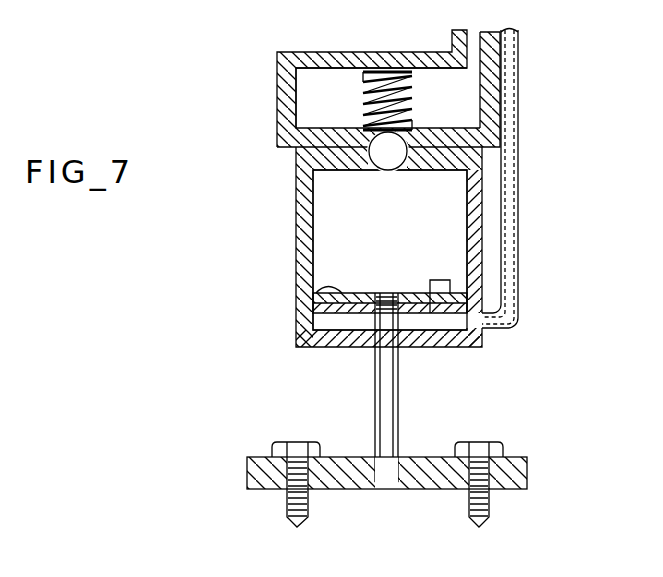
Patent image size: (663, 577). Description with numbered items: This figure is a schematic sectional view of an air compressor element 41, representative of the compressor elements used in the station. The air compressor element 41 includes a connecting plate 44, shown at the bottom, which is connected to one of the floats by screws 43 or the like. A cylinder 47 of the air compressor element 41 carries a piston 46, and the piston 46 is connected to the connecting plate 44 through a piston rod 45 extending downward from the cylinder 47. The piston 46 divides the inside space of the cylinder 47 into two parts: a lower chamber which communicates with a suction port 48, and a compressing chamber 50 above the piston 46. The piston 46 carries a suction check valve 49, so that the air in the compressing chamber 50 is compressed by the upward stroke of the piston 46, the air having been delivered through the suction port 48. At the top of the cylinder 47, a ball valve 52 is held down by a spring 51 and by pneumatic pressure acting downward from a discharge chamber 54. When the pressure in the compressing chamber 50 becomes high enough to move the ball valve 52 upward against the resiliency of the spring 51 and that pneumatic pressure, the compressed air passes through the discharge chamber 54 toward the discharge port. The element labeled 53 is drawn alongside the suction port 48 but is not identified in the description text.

The air compressor element 41 is at (266, 46).
The screws 43 is at (308, 505).
The connecting plate 44 is at (437, 487).
The piston rod 45 is at (397, 386).
The piston 46 is at (314, 293).
The cylinder 47 is at (297, 254).
The suction port 48 is at (508, 88).
The suction check valve 49 is at (450, 282).
The compressing chamber 50 is at (404, 225).
The spring 51 is at (410, 108).
The ball valve 52 is at (398, 153).
The cable 53 is at (505, 28).
The discharge chamber 54 is at (345, 110).